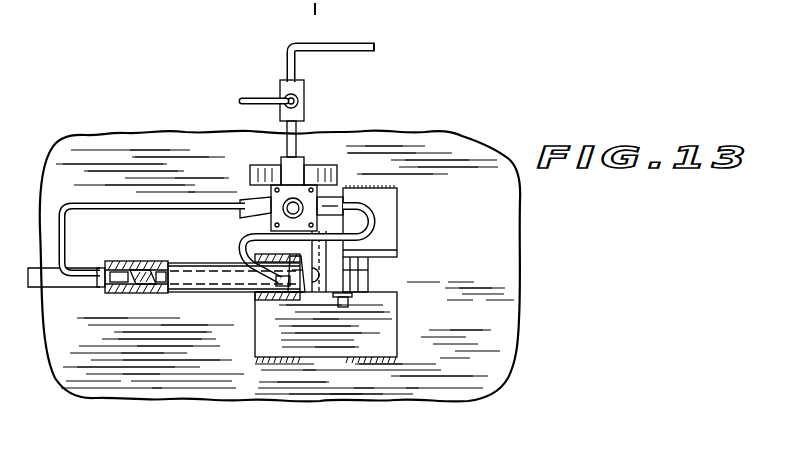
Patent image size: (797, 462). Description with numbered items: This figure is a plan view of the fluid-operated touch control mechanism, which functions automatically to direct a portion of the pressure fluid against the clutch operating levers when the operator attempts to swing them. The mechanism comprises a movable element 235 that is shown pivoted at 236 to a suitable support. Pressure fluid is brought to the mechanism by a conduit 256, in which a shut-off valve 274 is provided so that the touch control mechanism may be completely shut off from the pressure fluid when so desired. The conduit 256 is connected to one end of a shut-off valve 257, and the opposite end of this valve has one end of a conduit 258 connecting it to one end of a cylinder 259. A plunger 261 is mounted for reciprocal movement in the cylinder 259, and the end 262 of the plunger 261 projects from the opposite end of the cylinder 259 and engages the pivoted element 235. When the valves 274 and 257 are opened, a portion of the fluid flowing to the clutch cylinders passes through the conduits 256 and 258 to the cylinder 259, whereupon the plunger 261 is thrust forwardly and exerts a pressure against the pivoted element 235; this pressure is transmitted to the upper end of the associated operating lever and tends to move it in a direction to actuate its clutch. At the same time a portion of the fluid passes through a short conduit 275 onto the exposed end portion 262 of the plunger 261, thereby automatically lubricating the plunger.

The conduit 256 is at (360, 43).
The shut-off valve 274 is at (305, 88).
The shut-off valve 257 is at (302, 190).
The conduit 258 is at (163, 206).
The short conduit 275 is at (378, 217).
The plunger 261 is at (118, 262).
The cylinder 259 is at (146, 294).
The end of plunger 262 is at (288, 279).
The movable element 235 is at (354, 277).
The pivot 236 is at (342, 307).